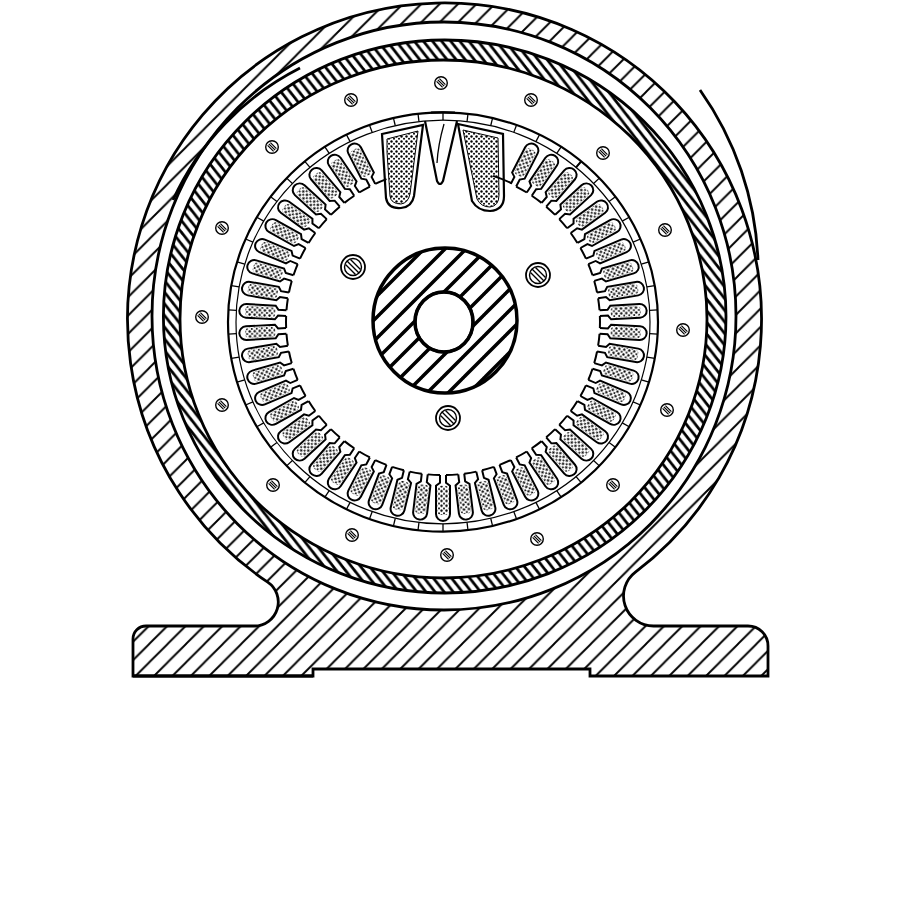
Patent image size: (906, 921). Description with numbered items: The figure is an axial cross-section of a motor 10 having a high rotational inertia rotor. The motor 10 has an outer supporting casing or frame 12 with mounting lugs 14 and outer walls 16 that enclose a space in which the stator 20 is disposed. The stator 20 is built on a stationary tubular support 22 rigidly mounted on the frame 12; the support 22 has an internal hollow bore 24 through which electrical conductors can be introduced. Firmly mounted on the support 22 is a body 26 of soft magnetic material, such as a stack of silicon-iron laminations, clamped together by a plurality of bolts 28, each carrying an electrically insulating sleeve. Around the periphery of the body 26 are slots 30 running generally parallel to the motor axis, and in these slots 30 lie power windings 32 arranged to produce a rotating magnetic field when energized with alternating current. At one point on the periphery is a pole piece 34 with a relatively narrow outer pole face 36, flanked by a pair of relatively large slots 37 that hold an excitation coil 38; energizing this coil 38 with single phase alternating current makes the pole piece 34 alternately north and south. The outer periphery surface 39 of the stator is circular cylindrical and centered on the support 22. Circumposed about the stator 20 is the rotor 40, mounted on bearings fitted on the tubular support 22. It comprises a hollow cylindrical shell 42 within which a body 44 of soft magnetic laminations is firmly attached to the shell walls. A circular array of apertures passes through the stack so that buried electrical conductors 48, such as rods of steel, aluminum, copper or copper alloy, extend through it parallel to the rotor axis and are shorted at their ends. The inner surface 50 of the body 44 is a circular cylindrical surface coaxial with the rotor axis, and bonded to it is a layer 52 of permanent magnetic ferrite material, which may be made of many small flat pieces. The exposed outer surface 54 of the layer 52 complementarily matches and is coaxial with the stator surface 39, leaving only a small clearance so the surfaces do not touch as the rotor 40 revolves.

The motor 10 is at (75, 367).
The outer supporting casing or frame 12 is at (727, 458).
The mounting lugs 14 is at (672, 677).
The outer walls 16 is at (722, 166).
The stator 20 is at (563, 327).
The stationary tubular support 22 is at (378, 345).
The internal hollow bore 24 is at (422, 302).
The body of soft magnetic material 26 is at (635, 297).
The bolts 28 is at (353, 254).
The slots 30 is at (290, 387).
The power windings 32 is at (300, 405).
The pole piece 34 is at (452, 110).
The outer pole face 36 is at (437, 118).
The relatively large slots 37 is at (472, 200).
The excitation coil 38 is at (480, 172).
The outer periphery surface 39 is at (605, 258).
The rotor 40 is at (688, 313).
The hollow cylindrical shell 42 is at (210, 158).
The body of soft magnetic material 44 is at (308, 105).
The buried electrical conductors 48 is at (266, 140).
The inner surface 50 is at (603, 178).
The layer of magnetizable permanent magnetic material 52 is at (582, 167).
The exposed outer surface 54 is at (388, 113).